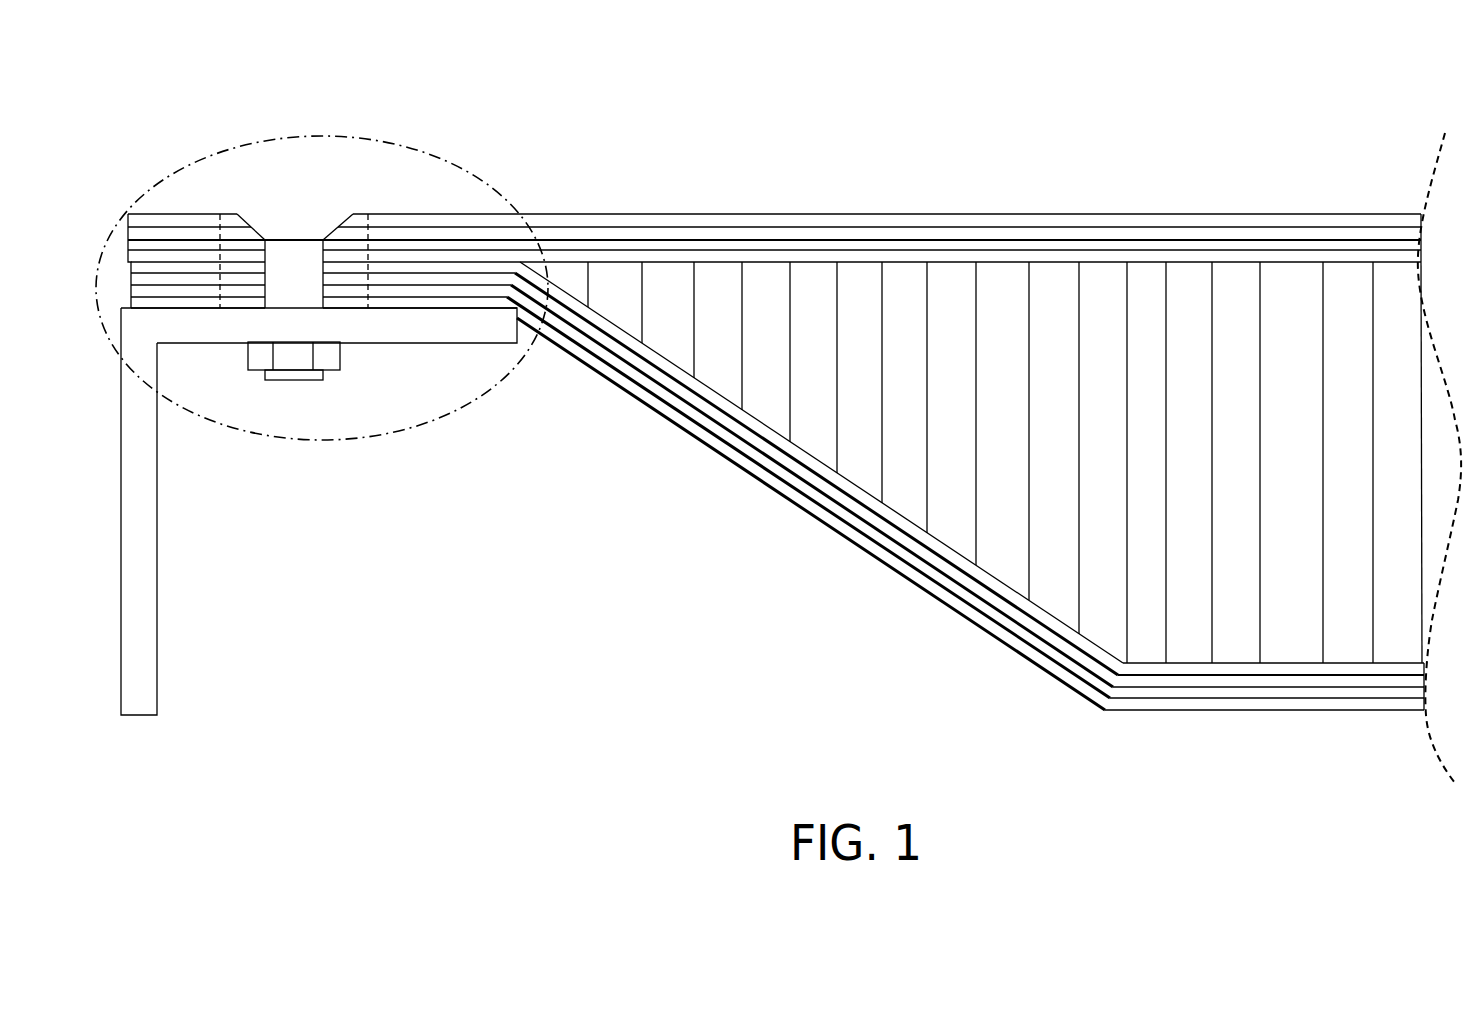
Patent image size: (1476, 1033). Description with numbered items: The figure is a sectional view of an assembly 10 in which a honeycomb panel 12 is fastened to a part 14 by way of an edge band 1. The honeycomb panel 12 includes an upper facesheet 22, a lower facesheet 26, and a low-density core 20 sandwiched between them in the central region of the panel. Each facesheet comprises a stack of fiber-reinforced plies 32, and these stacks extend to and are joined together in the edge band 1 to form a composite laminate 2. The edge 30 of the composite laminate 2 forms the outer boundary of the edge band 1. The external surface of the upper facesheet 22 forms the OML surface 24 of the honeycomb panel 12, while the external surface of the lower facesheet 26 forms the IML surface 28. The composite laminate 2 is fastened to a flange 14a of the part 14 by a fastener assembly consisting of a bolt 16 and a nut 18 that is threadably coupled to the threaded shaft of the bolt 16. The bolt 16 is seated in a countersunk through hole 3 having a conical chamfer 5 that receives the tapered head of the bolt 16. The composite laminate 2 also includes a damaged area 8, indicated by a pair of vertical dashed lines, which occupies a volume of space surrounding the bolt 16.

The edge band 1 is at (363, 134).
The composite laminate 2 is at (425, 208).
The countersunk through hole 3 is at (318, 265).
The conical chamfer 5 is at (255, 215).
The damaged area 8 is at (372, 217).
The assembly 10 is at (1112, 178).
The honeycomb panel 12 is at (1250, 198).
The part 14 is at (157, 557).
The flange 14a is at (458, 345).
The bolt 16 is at (290, 225).
The nut 18 is at (340, 355).
The low-density core 20 is at (1311, 494).
The upper facesheet 22 is at (834, 207).
The OML surface 24 is at (640, 212).
The lower facesheet 26 is at (823, 528).
The IML surface 28 is at (655, 405).
The edge 30 is at (129, 240).
The fiber-reinforced plies 32 is at (183, 230).